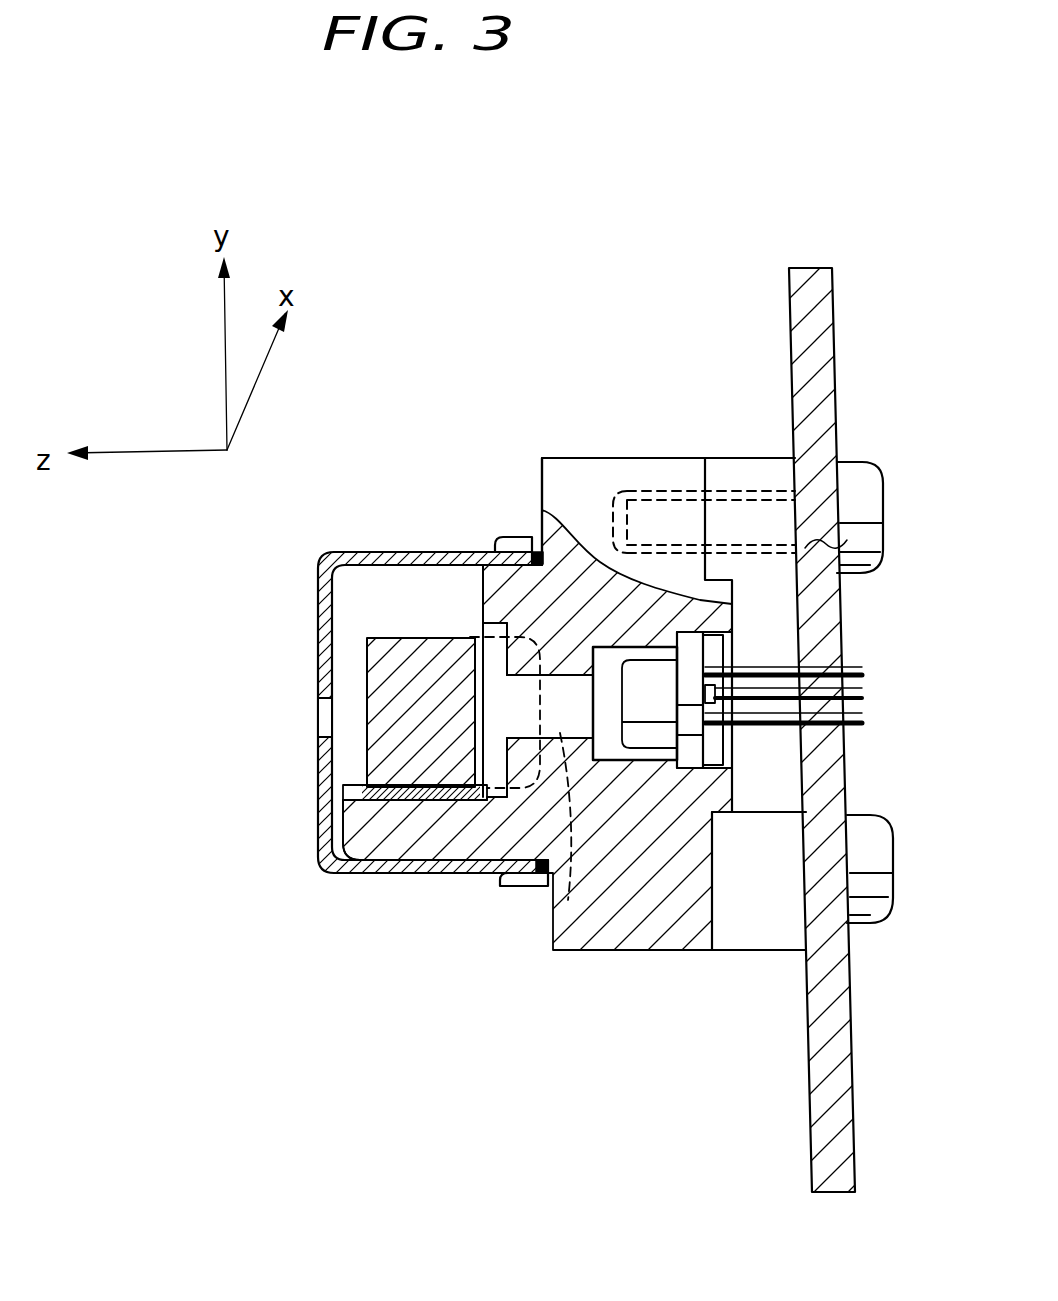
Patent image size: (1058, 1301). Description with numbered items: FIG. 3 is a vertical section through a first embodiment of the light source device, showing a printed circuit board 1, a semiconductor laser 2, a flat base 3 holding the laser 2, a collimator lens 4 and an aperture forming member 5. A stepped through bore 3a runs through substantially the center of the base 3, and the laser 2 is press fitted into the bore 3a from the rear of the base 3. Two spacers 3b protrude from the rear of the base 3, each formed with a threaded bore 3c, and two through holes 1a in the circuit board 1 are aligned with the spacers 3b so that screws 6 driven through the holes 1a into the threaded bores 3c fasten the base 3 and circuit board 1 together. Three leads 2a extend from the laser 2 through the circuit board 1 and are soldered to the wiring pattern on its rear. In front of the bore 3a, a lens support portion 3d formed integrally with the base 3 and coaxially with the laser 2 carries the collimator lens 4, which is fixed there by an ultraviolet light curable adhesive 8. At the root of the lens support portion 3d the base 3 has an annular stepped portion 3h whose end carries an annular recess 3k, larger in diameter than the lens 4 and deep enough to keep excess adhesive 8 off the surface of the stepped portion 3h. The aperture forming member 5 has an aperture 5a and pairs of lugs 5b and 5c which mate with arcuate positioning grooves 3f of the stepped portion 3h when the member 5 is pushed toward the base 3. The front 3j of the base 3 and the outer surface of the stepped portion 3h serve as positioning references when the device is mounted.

The printed circuit board 1 is at (842, 379).
The through holes 1a is at (868, 567).
The semiconductor laser 2 is at (648, 718).
The leads 2a is at (864, 722).
The flat base 3 is at (606, 445).
The stepped through bore 3a is at (607, 718).
The spacers 3b is at (760, 470).
The threaded bore 3c is at (678, 485).
The lens support portion 3d is at (387, 843).
The arcuate positioning grooves 3f is at (520, 545).
The annular stepped portion 3h is at (482, 593).
The vertical surface or front of the base 3j is at (540, 477).
The annular recess 3k is at (480, 640).
The collimator lens 4 is at (400, 653).
The aperture forming member 5 is at (312, 622).
The aperture 5a is at (323, 717).
The lugs 5b is at (500, 538).
The lugs 5c is at (582, 938).
The screws 6 is at (884, 532).
The ultraviolet light curable adhesive 8 is at (415, 802).